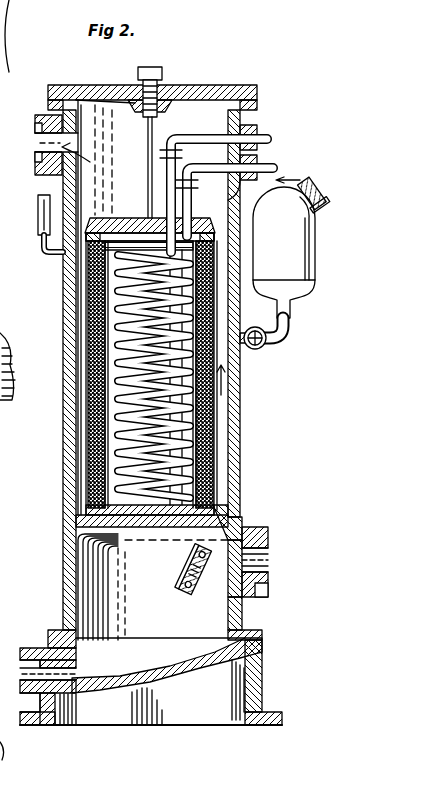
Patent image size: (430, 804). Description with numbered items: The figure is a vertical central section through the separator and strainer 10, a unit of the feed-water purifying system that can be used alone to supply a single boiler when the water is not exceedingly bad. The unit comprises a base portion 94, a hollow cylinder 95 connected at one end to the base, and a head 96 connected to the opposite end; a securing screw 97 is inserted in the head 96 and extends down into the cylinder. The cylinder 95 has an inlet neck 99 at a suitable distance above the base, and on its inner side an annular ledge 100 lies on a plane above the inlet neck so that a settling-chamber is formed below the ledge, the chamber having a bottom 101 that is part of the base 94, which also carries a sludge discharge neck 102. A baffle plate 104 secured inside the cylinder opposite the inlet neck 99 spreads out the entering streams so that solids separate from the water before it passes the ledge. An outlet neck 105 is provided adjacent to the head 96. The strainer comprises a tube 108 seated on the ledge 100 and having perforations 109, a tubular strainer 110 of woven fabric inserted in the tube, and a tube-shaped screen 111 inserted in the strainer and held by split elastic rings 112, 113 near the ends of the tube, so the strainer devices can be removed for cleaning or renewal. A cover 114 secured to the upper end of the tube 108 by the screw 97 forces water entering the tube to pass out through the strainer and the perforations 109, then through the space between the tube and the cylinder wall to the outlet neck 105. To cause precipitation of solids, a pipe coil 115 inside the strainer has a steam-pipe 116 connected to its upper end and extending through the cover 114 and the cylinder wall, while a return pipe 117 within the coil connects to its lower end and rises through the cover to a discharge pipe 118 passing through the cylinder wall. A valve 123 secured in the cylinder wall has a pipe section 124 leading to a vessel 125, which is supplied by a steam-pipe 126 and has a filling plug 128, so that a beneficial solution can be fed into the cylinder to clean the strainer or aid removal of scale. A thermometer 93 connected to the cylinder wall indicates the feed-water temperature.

The separator and strainer 10 is at (250, 430).
The thermometer 93 is at (38, 216).
The base portion 94 is at (262, 679).
The hollow cylinder 95 is at (80, 440).
The head 96 is at (100, 85).
The securing screw 97 is at (162, 118).
The inlet neck 99 is at (268, 556).
The annular ledge 100 is at (238, 522).
The bottom 101 is at (113, 695).
The sludge discharge neck 102 is at (56, 636).
The baffle plate 104 is at (200, 592).
The outlet neck 105 is at (36, 152).
The tube 108 is at (227, 395).
The perforations 109 is at (207, 410).
The tubular strainer 110 is at (207, 438).
The tube-shaped screen 111 is at (290, 476).
The split elastic ring 112 is at (136, 514).
The split elastic ring 113 is at (135, 235).
The cover 114 is at (205, 231).
The pipe coil 115 is at (112, 316).
The steam-pipe 116 is at (258, 169).
The return pipe 117 is at (95, 413).
The discharge pipe 118 is at (294, 144).
The valve 123 is at (262, 350).
The pipe section 124 is at (286, 320).
The vessel 125 is at (320, 262).
The steam-pipe 126 is at (315, 184).
The filling plug 128 is at (287, 188).